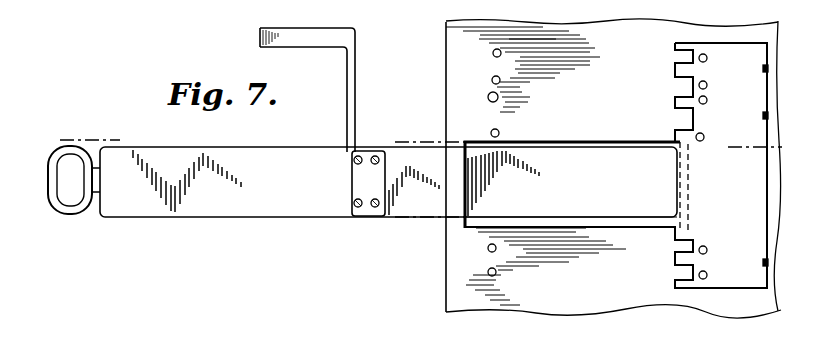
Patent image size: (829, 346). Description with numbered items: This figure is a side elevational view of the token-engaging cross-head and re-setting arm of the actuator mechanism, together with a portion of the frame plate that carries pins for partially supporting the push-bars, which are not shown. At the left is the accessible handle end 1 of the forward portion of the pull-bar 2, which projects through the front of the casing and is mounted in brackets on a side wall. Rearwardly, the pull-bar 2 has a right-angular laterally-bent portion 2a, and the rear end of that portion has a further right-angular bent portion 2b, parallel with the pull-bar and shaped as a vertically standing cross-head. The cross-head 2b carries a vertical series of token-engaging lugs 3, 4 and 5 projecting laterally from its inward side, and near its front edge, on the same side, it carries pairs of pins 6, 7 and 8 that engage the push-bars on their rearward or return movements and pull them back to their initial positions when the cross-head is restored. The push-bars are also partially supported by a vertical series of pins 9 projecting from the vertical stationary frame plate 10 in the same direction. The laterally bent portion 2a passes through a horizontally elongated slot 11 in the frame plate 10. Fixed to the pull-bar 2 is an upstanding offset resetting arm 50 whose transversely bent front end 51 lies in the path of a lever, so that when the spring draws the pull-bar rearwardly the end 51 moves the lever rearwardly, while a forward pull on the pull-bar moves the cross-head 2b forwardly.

The handle end 1 is at (48, 190).
The pull-bar 2 is at (384, 182).
The laterally-bent portion 2a is at (680, 201).
The cross-head 2b is at (721, 165).
The token-engaging lug 3 is at (763, 68).
The token-engaging lug 4 is at (763, 115).
The token-engaging lug 5 is at (763, 262).
The pin 6 is at (707, 60).
The pin 7 is at (707, 103).
The pin 8 is at (715, 264).
The pin 9 is at (489, 270).
The frame plate 10 is at (613, 168).
The slot 11 is at (580, 142).
The resetting arm 50 is at (355, 108).
The bent front end 51 is at (259, 40).